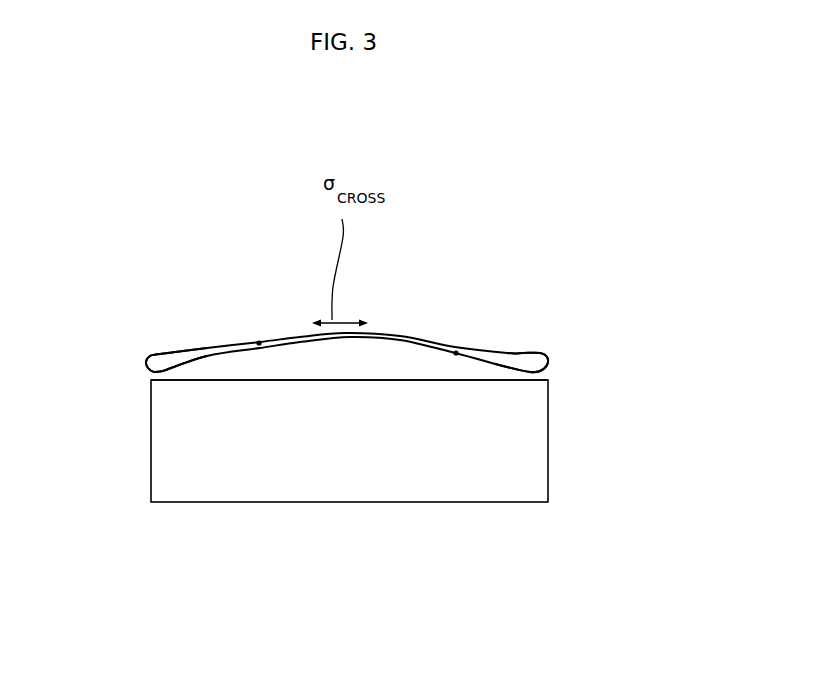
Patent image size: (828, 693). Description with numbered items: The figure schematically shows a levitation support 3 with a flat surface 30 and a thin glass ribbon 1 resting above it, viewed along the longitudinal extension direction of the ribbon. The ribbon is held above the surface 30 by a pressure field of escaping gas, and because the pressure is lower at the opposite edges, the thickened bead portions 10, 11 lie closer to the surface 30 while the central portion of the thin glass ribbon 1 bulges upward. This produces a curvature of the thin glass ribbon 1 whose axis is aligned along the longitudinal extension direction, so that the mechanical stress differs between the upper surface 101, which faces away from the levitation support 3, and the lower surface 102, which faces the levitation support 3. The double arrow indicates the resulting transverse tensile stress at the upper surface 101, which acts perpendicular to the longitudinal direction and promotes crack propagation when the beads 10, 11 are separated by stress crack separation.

The thin glass ribbon 1 is at (213, 346).
The thickened bead portion 10 is at (165, 365).
The thickened bead portion 11 is at (532, 362).
The upper surface 101 is at (259, 342).
The lower surface 102 is at (456, 353).
The surface 30 is at (403, 380).
The levitation support 3 is at (340, 462).